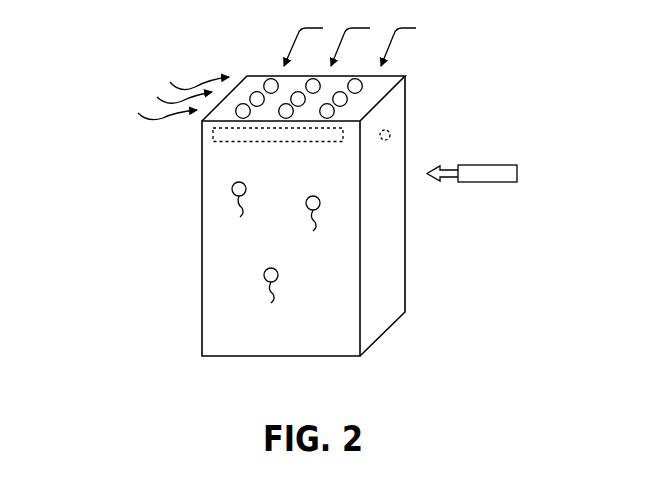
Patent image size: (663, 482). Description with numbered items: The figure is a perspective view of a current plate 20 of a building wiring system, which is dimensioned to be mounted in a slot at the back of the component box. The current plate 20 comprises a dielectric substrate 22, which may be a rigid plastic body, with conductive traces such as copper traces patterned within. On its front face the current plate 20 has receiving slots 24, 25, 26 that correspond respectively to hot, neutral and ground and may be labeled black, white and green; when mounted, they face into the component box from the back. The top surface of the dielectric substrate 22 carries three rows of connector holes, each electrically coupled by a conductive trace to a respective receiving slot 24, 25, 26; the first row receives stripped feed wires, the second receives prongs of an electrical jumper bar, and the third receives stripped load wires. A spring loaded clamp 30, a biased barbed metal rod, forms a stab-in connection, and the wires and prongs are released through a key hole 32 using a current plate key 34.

The current plate 20 is at (314, 187).
The dielectric substrate 22 is at (380, 275).
The receiving slot 24 is at (232, 189).
The receiving slot 25 is at (320, 204).
The receiving slot 26 is at (278, 276).
The spring loaded clamp 30 is at (222, 128).
The key hole 32 is at (390, 132).
The current plate key 34 is at (518, 173).